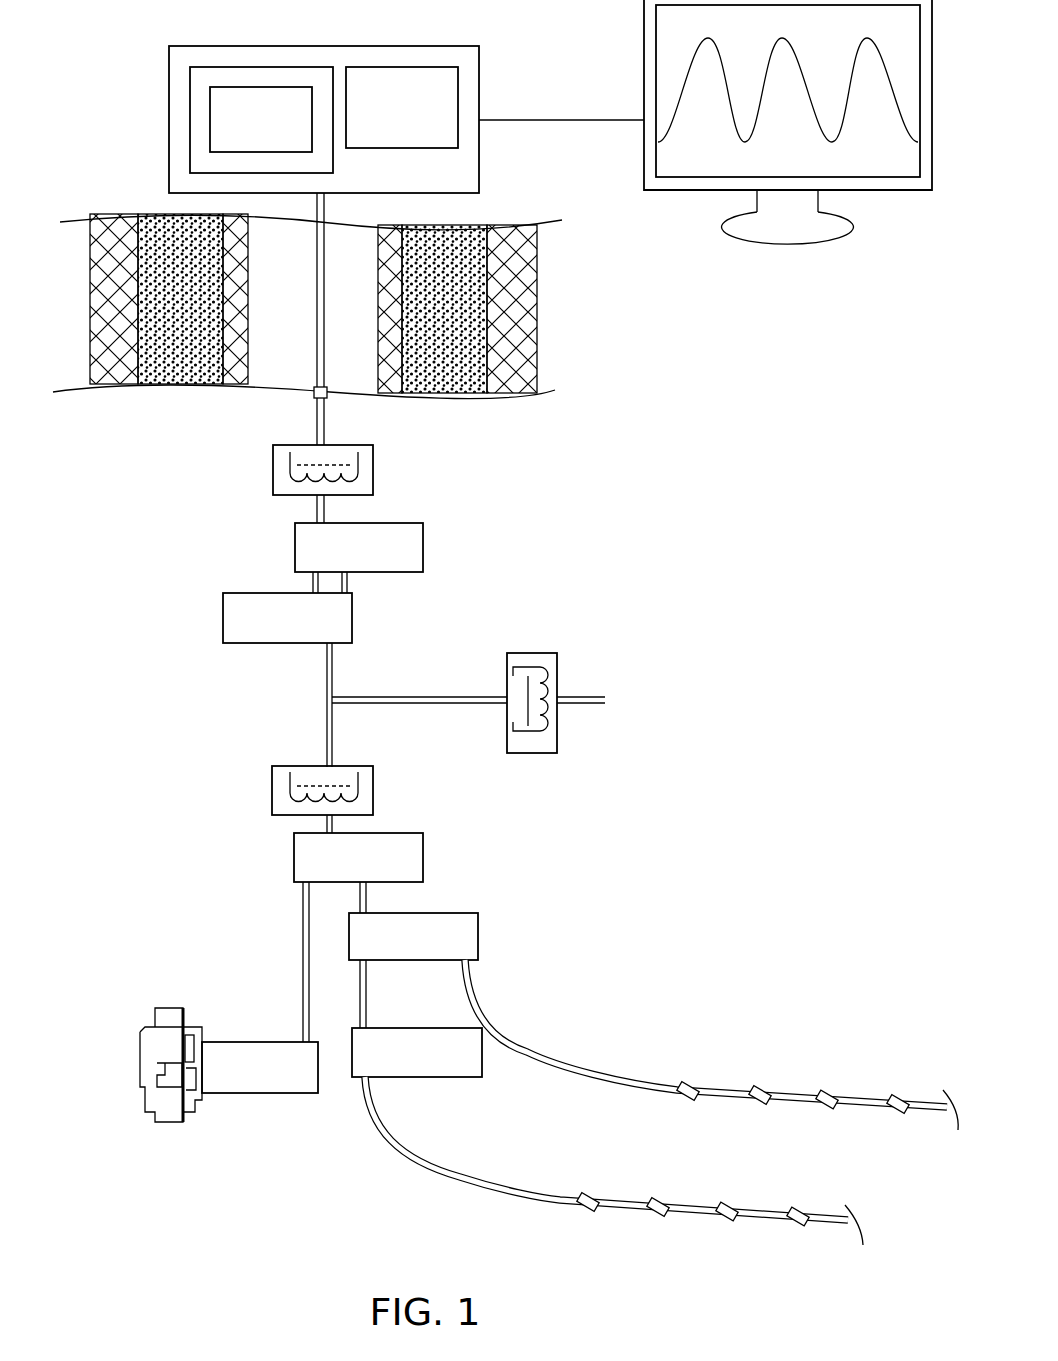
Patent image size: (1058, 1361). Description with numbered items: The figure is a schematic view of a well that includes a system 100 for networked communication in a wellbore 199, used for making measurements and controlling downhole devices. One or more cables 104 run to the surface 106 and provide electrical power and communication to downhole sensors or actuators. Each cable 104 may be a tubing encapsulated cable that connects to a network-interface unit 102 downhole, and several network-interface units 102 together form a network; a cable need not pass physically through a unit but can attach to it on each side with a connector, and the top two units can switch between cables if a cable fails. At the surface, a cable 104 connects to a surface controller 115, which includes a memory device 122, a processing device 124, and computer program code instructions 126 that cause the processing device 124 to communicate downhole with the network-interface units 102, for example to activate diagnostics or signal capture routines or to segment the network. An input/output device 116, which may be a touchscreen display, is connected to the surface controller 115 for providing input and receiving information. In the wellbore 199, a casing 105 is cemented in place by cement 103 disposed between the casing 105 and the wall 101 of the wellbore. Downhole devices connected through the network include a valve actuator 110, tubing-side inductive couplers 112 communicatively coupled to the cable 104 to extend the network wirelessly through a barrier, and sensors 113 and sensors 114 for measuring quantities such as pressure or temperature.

The system 100 is at (172, 1203).
The wall 101 is at (537, 290).
The network-interface unit 102 is at (393, 562).
The cement 103 is at (445, 400).
The cable 104 is at (430, 697).
The casing 105 is at (247, 386).
The surface 106 is at (98, 207).
The valve actuator 110 is at (163, 1007).
The inductive coupler 112 is at (273, 470).
The sensor 113 is at (655, 1205).
The sensor 114 is at (755, 1088).
The surface controller 115 is at (169, 80).
The input/output device 116 is at (876, 191).
The memory device 122 is at (333, 157).
The processing device 124 is at (395, 67).
The computer program code instructions 126 is at (243, 137).
The wellbore 199 is at (262, 311).